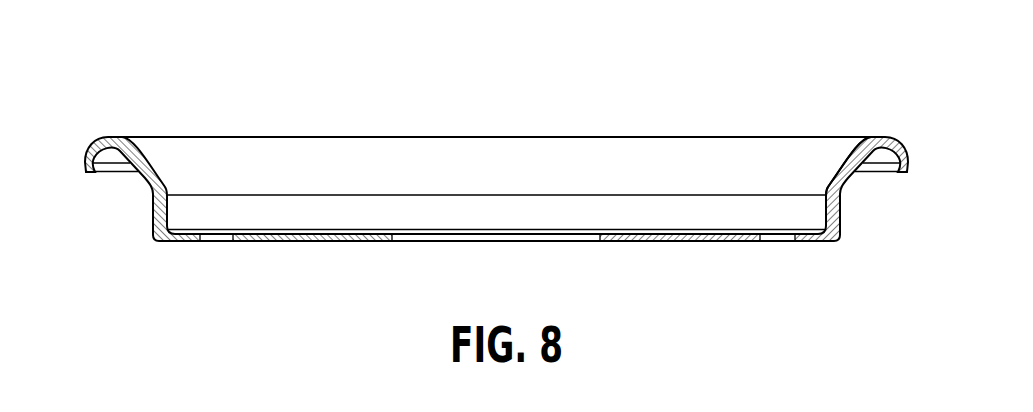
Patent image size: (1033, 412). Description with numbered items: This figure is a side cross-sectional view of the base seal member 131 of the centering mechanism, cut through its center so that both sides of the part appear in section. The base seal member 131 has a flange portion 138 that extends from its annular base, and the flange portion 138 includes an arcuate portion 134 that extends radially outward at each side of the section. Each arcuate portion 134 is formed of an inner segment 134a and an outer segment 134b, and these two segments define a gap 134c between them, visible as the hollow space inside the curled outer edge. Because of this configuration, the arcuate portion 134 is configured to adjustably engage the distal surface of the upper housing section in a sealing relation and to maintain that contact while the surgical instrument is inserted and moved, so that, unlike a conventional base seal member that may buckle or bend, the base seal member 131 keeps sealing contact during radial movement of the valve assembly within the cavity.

The base seal member 131 is at (498, 131).
The arcuate portion 134 is at (873, 136).
The inner segment 134a is at (137, 173).
The outer segment 134b is at (90, 173).
The gap 134c is at (869, 162).
The flange portion 138 is at (826, 188).